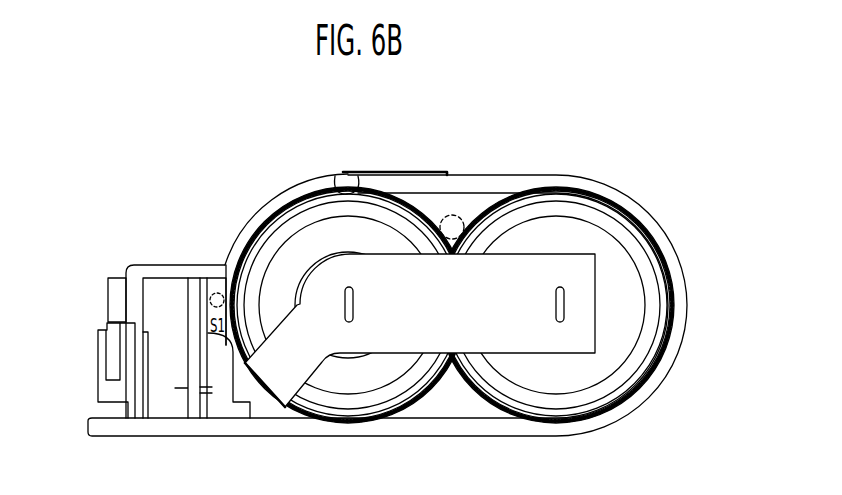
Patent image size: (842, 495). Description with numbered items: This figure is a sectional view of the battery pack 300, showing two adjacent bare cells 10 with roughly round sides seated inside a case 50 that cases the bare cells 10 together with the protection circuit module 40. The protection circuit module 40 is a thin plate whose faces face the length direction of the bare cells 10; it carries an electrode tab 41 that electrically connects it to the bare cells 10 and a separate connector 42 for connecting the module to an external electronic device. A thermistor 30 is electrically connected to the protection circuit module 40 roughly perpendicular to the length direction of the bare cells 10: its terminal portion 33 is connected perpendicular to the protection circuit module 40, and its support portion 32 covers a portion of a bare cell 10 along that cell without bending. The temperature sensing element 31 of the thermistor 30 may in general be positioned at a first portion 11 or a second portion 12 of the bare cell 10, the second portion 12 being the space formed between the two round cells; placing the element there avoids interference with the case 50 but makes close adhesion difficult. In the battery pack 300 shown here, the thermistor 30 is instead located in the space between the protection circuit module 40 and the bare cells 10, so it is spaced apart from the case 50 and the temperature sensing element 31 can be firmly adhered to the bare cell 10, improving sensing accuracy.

The battery pack 300 is at (557, 120).
The bare cell 10 is at (302, 245).
The first portion 11 is at (360, 180).
The second portion 12 is at (457, 215).
The electrode tab 41 is at (548, 270).
The case 50 is at (310, 178).
The thermistor 30 is at (112, 143).
The temperature sensing element 31 is at (217, 292).
The support portion 32 is at (240, 250).
The terminal portion 33 is at (232, 368).
The protection circuit module 40 is at (193, 413).
The connector 42 is at (105, 390).